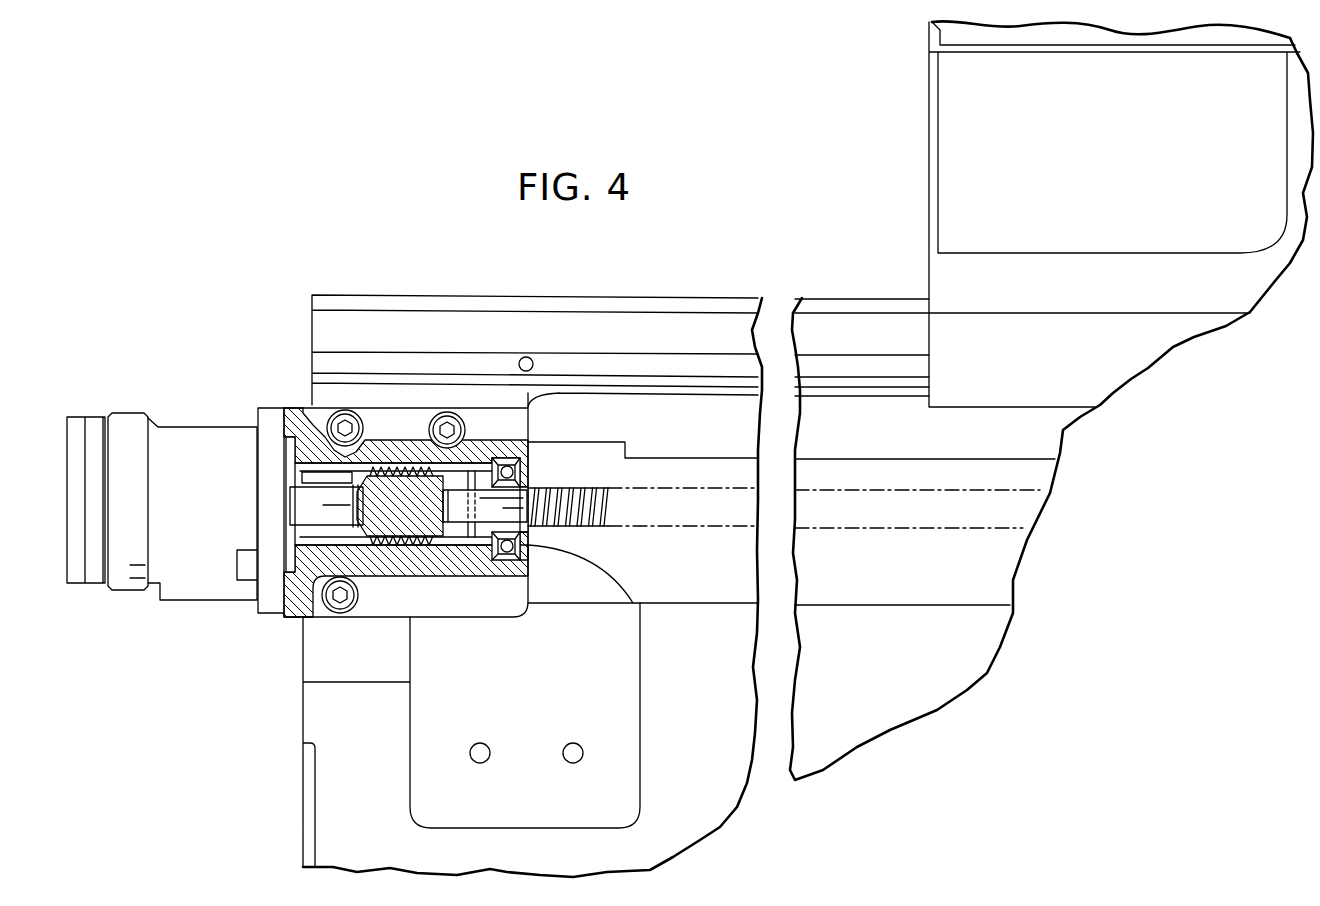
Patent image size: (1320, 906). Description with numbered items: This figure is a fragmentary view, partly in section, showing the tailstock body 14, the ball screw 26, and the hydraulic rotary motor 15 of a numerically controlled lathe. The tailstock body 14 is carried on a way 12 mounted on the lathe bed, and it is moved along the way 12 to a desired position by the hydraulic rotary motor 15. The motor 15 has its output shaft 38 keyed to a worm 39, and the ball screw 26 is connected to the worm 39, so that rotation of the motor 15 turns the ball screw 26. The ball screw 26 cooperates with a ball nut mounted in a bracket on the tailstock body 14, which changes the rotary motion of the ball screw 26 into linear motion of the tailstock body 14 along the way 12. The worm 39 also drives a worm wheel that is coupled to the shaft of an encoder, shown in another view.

The way 12 is at (585, 335).
The tailstock body 14 is at (923, 155).
The hydraulic rotary motor 15 is at (126, 413).
The ball screw 26 is at (581, 487).
The output shaft 38 is at (297, 532).
The worm 39 is at (412, 538).